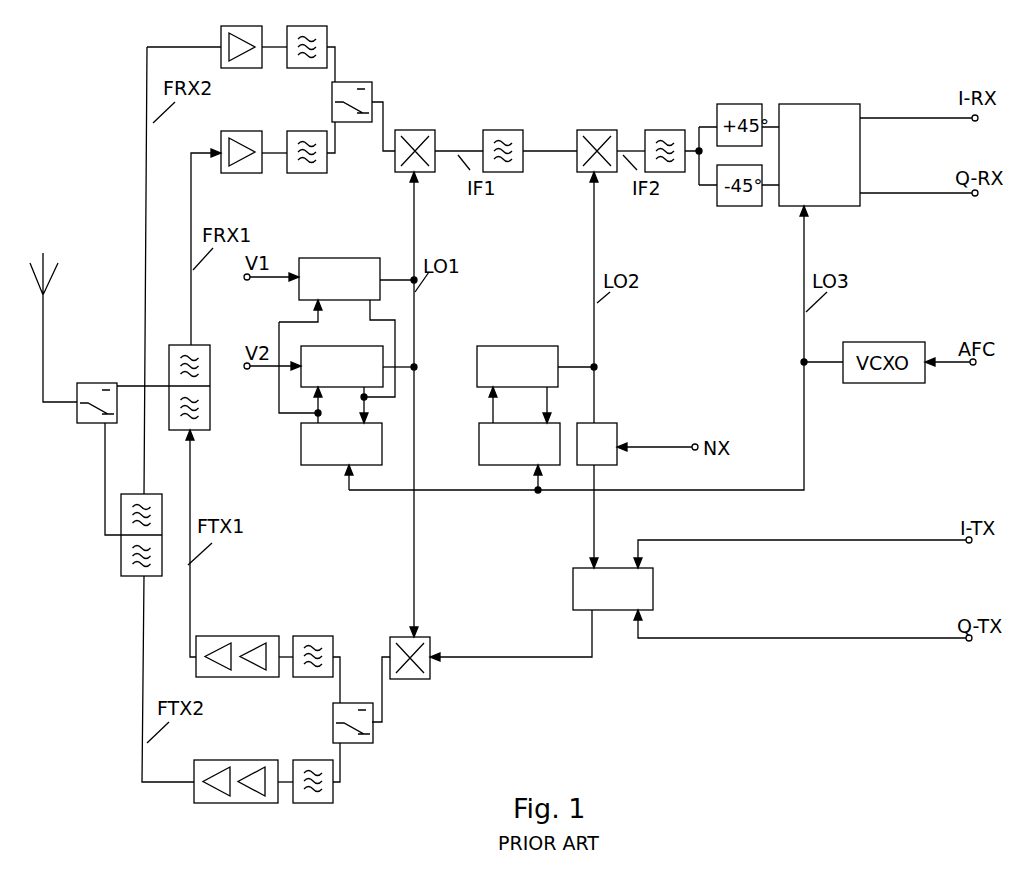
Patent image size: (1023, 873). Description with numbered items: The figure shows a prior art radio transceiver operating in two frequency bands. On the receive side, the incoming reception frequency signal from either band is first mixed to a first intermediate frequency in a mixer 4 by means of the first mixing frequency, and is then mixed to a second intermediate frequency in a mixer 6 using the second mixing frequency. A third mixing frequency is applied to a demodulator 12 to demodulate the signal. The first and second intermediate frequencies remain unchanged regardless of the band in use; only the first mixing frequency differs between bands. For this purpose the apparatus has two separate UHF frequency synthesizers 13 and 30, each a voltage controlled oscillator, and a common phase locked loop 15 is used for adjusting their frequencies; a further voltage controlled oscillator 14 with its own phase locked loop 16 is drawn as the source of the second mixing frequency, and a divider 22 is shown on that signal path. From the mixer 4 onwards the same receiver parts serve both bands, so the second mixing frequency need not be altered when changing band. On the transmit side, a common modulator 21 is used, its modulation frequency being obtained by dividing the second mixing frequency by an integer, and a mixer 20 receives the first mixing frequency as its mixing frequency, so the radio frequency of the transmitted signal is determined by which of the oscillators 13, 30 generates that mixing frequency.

The mixer 4 is at (423, 132).
The mixer 6 is at (600, 132).
The demodulator 12 is at (838, 105).
The UHF frequency synthesizer 13 is at (325, 345).
The third voltage controlled oscillator 14 is at (498, 345).
The phase locked loop 15 is at (317, 467).
The second phase locked loop 16 is at (479, 438).
The mixer 20 is at (430, 630).
The modulator 21 is at (657, 600).
The frequency divider 22 is at (617, 433).
The UHF frequency synthesizer 30 is at (328, 257).